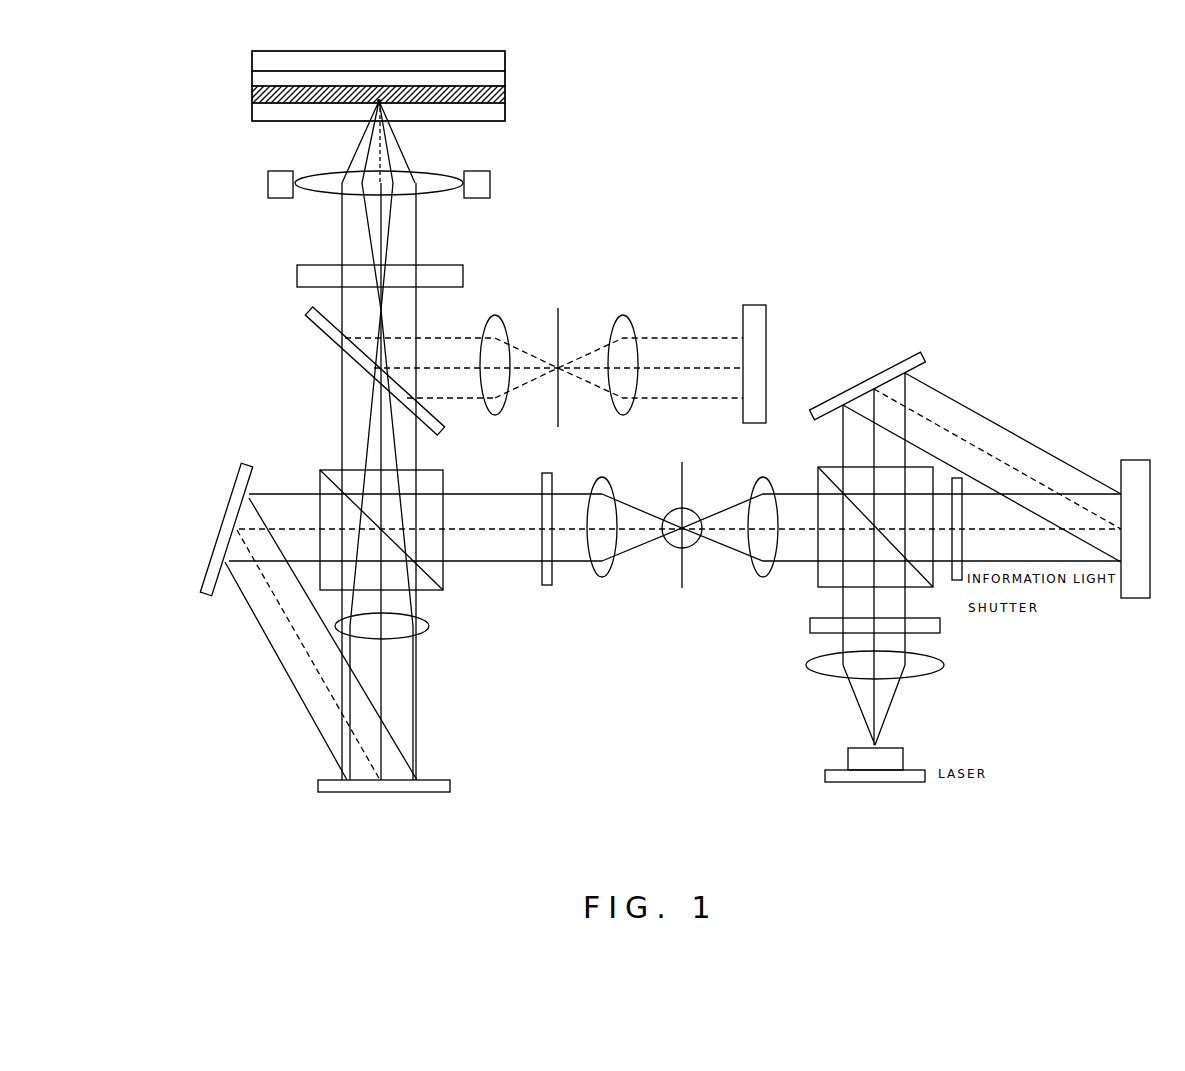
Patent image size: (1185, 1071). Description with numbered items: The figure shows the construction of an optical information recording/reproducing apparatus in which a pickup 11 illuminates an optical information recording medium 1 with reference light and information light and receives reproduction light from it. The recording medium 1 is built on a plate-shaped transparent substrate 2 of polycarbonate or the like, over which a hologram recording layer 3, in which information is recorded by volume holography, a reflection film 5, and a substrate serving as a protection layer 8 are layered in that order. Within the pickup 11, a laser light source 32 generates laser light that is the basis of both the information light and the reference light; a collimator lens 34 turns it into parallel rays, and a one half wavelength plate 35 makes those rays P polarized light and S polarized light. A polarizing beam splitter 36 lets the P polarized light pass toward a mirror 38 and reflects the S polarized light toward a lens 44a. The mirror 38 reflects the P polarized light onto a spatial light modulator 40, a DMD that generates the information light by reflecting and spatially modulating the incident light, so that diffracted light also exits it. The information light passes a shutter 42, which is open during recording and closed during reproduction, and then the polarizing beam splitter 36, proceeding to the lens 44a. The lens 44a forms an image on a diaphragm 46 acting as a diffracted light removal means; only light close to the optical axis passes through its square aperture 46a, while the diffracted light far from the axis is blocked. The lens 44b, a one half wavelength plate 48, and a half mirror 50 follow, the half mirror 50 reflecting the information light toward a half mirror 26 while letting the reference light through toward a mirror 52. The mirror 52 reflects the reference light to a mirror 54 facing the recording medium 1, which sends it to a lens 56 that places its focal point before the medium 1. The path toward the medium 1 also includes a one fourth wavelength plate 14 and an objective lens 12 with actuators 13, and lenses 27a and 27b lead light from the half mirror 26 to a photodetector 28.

The optical information recording medium 1 is at (522, 82).
The transparent substrate 2 is at (252, 113).
The hologram recording layer 3 is at (252, 96).
The reflection film 5 is at (252, 78).
The substrate (protection layer) 8 is at (252, 56).
The pickup 11 is at (1060, 714).
The objective lens 12 is at (447, 175).
The actuators 13 is at (268, 182).
The one fourth wavelength plate 14 is at (297, 276).
The half mirror 26 is at (322, 330).
The lens 27a is at (492, 414).
The lens 27b is at (620, 414).
The photodetector 28 is at (763, 352).
The laser light source 32 is at (825, 776).
The collimator lens 34 is at (928, 655).
The one half wavelength plate 35 is at (810, 625).
The polarizing beam splitter 36 is at (818, 482).
The mirror 38 is at (922, 360).
The spatial light modulator 40 is at (1128, 466).
The shutter 42 is at (957, 580).
The lens 44a is at (758, 576).
The lens 44b is at (598, 576).
The diaphragm 46 is at (684, 570).
The aperture 46a is at (692, 508).
The one half wavelength plate 48 is at (547, 473).
The half mirror 50 is at (440, 572).
The mirror 52 is at (226, 516).
The mirror 54 is at (450, 786).
The lens 56 is at (430, 627).